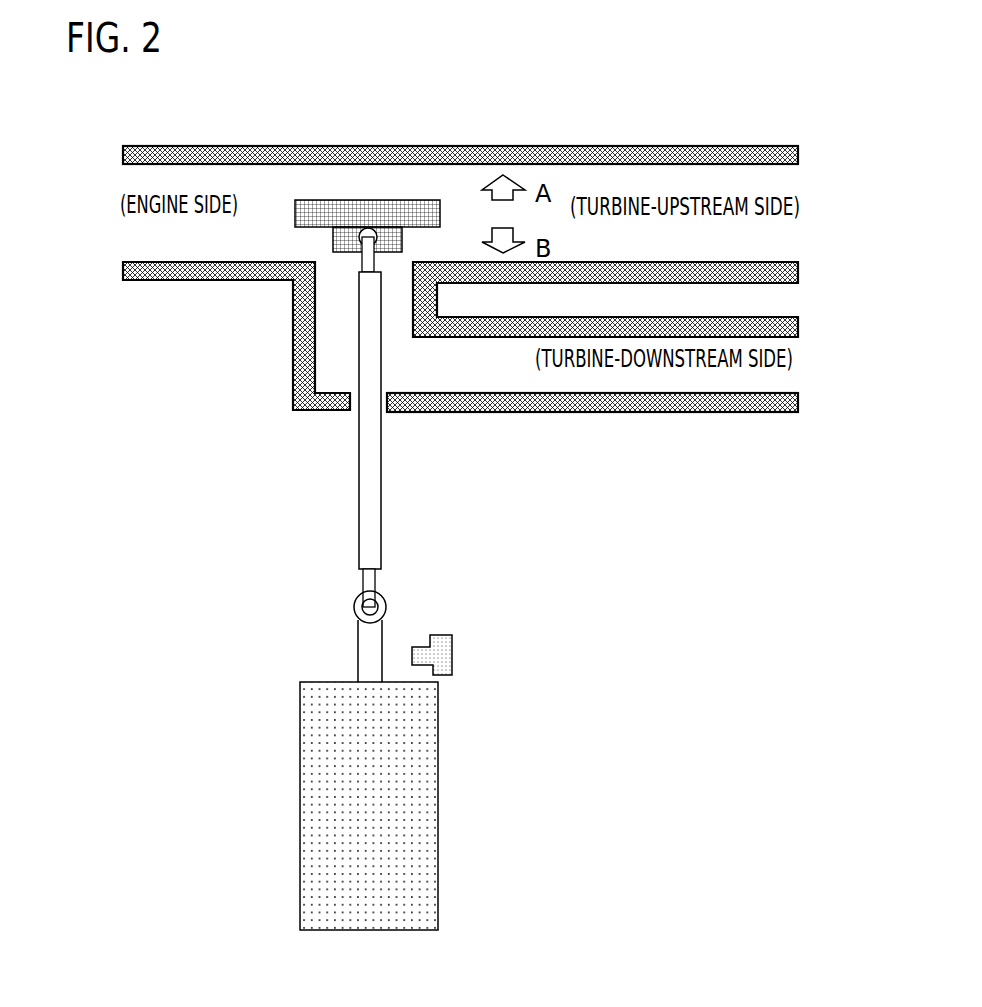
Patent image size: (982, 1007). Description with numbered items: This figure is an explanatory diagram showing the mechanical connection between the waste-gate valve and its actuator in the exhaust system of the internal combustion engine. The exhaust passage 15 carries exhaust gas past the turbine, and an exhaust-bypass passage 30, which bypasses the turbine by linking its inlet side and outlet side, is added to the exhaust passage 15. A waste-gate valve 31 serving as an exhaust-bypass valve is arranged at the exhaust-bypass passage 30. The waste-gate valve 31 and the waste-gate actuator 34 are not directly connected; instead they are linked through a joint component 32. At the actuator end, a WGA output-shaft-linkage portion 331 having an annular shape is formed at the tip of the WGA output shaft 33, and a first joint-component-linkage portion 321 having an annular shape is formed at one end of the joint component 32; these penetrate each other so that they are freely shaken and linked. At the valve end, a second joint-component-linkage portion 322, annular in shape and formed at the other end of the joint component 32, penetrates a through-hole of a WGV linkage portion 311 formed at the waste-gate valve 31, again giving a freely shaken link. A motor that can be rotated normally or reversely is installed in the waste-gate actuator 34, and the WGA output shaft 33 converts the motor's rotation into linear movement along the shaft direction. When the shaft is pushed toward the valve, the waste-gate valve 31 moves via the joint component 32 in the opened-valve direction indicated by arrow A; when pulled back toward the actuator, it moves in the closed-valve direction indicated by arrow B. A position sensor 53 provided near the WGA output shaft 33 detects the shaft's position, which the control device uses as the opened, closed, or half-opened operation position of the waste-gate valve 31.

The exhaust passage 15 is at (195, 180).
The exhaust-bypass passage 30 is at (603, 376).
The waste-gate valve 31 is at (320, 219).
The WGV linkage portion 311 is at (348, 243).
The joint component 32 is at (293, 417).
The first joint-component-linkage portion 321 is at (363, 582).
The second joint-component-linkage portion 322 is at (362, 262).
The WGA output shaft 33 is at (392, 622).
The WGA output-shaft-linkage portion 331 is at (388, 605).
The waste-gate actuator 34 is at (327, 797).
The position sensor 53 is at (452, 657).